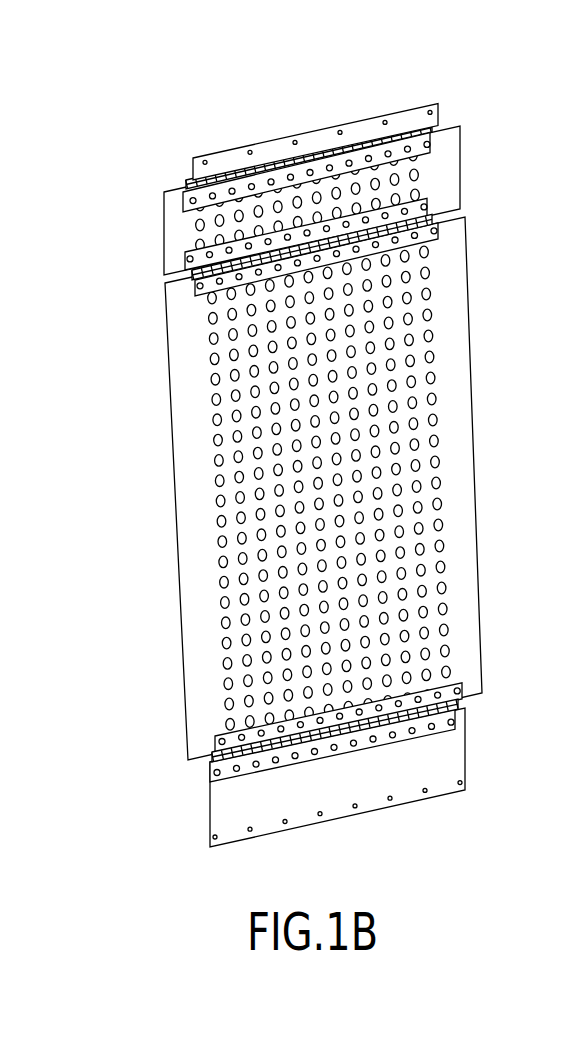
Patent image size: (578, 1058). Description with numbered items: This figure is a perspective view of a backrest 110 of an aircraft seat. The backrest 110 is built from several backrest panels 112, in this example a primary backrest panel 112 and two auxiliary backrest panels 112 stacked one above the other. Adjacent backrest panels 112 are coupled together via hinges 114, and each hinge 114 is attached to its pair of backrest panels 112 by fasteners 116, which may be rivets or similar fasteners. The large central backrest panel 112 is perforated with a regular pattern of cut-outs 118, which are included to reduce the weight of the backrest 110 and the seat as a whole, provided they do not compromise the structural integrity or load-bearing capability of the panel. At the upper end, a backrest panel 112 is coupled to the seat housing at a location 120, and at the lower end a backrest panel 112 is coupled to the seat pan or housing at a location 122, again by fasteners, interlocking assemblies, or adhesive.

The backrest 110 is at (146, 71).
The backrest panel 112 is at (460, 168).
The hinge 114 is at (442, 117).
The fastener 116 is at (432, 141).
The cut-out 118 is at (445, 567).
The location 120 is at (189, 152).
The location 122 is at (411, 809).